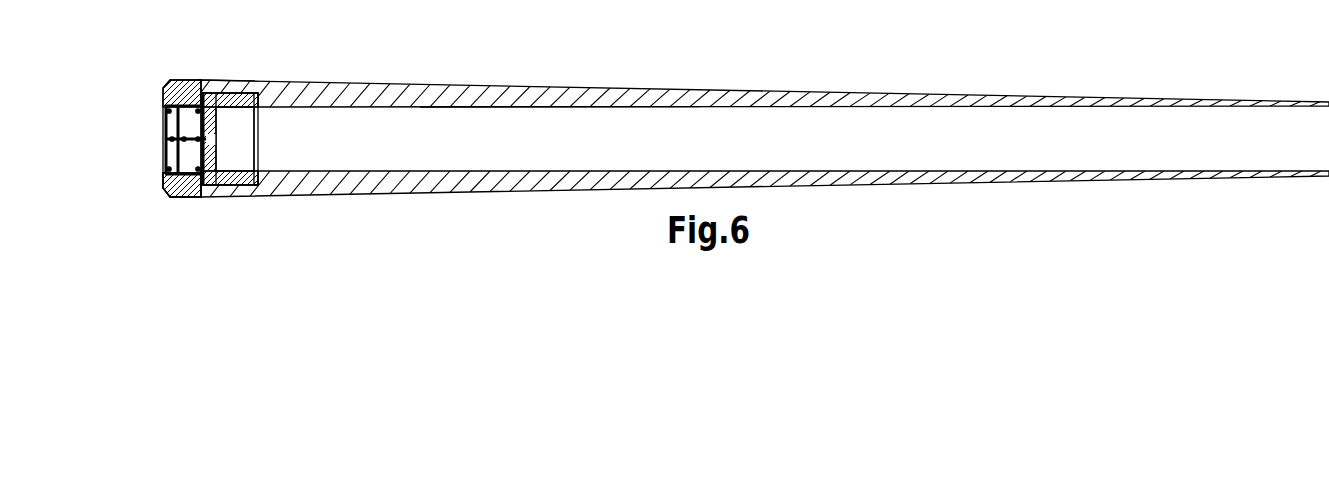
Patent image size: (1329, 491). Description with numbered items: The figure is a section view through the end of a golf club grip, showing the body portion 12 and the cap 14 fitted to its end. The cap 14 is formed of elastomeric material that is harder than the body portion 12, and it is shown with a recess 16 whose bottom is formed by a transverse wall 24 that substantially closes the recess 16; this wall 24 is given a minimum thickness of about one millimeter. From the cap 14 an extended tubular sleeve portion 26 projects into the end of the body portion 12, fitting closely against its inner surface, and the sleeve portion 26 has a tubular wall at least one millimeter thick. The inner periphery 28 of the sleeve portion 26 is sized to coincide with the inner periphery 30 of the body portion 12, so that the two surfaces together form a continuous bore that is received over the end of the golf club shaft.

The body portion 12 is at (427, 96).
The cap 14 is at (163, 95).
The recess 16 is at (218, 107).
The transverse wall 24 is at (177, 199).
The sleeve portion 26 is at (237, 187).
The inner periphery of sleeve portion 28 is at (214, 79).
The inner periphery of body portion 30 is at (516, 105).